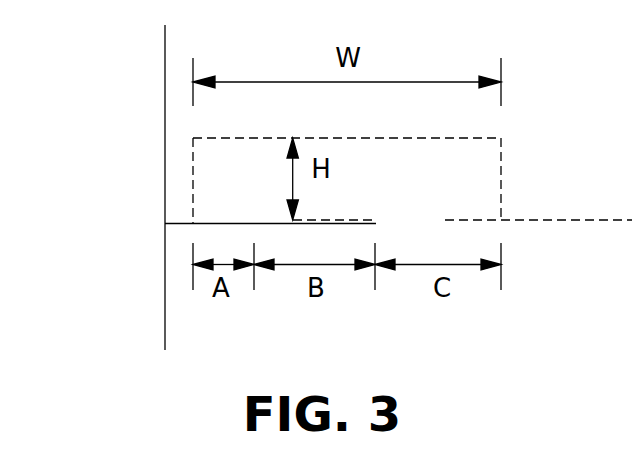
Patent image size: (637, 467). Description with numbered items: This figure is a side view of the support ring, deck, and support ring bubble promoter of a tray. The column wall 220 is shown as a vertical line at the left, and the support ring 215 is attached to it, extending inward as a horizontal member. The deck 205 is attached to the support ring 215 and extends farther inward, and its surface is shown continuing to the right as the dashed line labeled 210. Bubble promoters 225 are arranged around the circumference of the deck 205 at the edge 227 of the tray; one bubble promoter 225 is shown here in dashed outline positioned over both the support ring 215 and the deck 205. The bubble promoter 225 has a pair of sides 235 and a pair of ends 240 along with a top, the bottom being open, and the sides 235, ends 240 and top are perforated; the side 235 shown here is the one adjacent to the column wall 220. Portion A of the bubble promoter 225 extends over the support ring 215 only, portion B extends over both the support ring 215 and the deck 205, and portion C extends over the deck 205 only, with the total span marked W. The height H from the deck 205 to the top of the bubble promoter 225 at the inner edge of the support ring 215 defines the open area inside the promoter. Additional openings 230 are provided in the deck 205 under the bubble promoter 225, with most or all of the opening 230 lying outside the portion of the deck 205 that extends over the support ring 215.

The deck 205 is at (545, 221).
The substrate surface 210 is at (588, 220).
The support ring 215 is at (183, 227).
The column wall 220 is at (165, 104).
The bubble promoter 225 is at (427, 138).
The edge 227 is at (290, 220).
The opening 230 is at (410, 217).
The side 235 is at (192, 188).
The end 240 is at (243, 190).